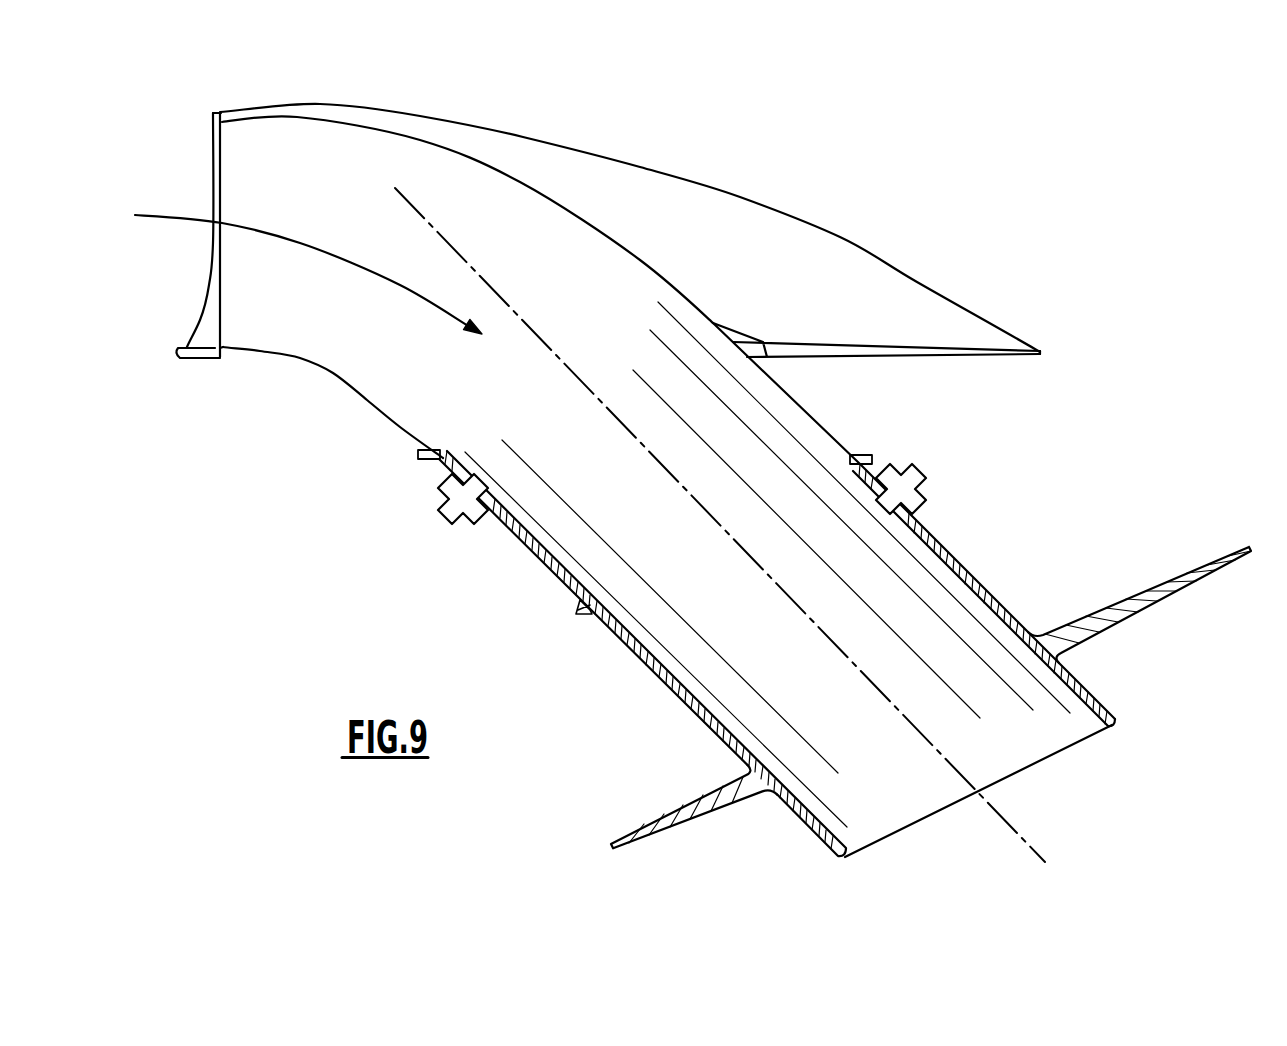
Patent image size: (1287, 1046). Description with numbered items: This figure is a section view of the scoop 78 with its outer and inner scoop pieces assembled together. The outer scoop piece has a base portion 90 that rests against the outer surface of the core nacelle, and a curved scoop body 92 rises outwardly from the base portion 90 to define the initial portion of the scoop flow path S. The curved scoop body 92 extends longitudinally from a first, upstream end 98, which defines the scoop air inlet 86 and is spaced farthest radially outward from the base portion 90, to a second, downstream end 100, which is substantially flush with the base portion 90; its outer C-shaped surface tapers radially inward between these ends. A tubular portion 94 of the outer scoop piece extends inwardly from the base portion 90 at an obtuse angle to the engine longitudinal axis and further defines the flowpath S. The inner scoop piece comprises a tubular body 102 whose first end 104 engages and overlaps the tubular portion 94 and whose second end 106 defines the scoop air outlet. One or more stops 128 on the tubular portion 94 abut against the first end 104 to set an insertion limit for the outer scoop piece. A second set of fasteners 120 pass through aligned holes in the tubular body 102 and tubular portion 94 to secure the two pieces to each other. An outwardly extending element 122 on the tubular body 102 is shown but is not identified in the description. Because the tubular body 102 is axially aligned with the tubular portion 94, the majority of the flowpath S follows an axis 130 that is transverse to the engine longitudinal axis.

The scoop 78 is at (1062, 174).
The scoop air inlet 86 is at (243, 286).
The base portion 90 is at (967, 357).
The curved scoop body 92 is at (567, 172).
The tubular portion 94 is at (813, 420).
The first end 98 is at (213, 123).
The second end 100 is at (1033, 347).
The tubular body 102 is at (670, 692).
The first end 104 is at (453, 463).
The second end 106 is at (1120, 723).
The second set of fasteners 120 is at (922, 483).
The mounting flange 122 is at (1148, 588).
The stops 128 is at (427, 462).
The axis 130 is at (546, 343).